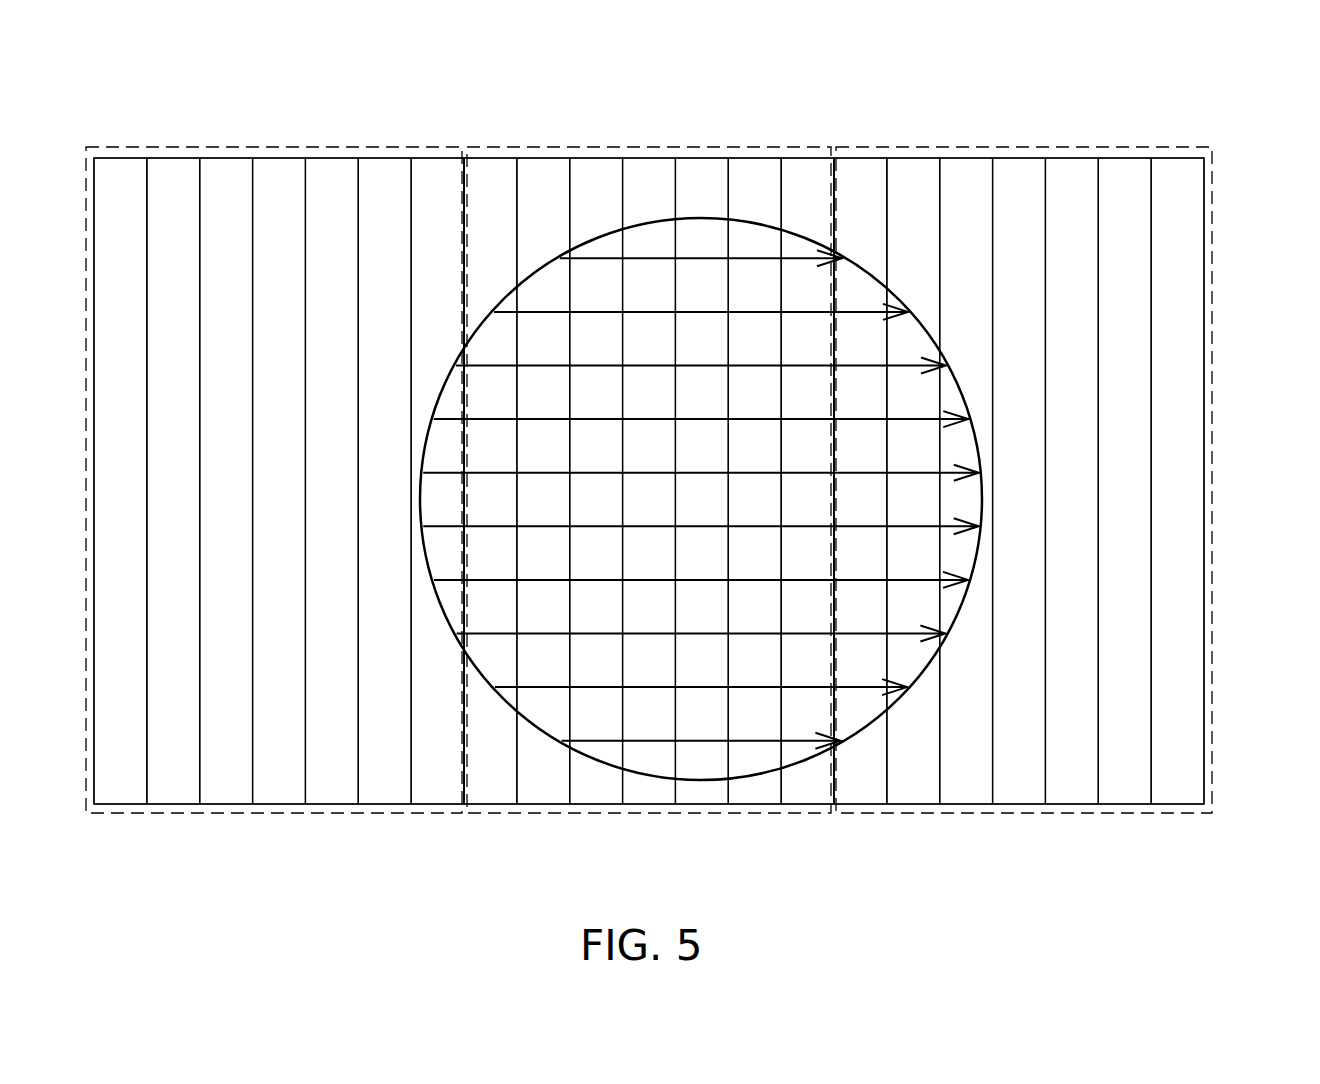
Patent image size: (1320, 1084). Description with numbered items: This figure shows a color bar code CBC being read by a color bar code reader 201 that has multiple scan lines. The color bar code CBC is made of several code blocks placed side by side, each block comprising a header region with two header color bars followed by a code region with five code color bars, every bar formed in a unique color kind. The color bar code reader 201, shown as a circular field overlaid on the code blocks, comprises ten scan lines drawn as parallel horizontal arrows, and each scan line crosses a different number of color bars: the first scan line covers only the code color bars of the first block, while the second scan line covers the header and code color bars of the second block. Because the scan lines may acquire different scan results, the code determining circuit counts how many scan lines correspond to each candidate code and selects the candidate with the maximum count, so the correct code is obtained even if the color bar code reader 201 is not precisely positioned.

The color bar code reader 201 is at (540, 730).
The color bar code CBC is at (1206, 97).